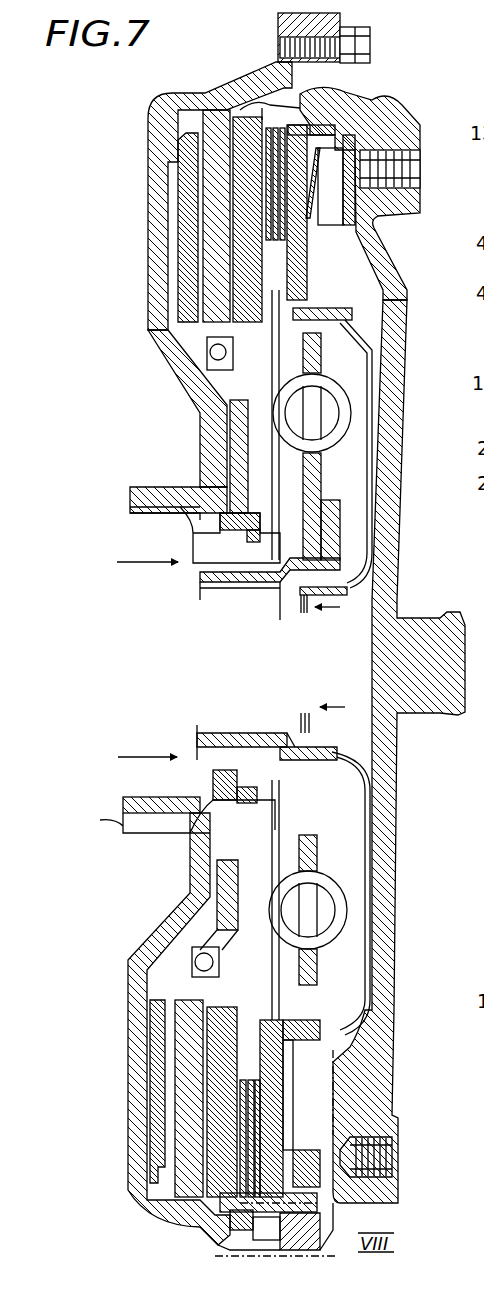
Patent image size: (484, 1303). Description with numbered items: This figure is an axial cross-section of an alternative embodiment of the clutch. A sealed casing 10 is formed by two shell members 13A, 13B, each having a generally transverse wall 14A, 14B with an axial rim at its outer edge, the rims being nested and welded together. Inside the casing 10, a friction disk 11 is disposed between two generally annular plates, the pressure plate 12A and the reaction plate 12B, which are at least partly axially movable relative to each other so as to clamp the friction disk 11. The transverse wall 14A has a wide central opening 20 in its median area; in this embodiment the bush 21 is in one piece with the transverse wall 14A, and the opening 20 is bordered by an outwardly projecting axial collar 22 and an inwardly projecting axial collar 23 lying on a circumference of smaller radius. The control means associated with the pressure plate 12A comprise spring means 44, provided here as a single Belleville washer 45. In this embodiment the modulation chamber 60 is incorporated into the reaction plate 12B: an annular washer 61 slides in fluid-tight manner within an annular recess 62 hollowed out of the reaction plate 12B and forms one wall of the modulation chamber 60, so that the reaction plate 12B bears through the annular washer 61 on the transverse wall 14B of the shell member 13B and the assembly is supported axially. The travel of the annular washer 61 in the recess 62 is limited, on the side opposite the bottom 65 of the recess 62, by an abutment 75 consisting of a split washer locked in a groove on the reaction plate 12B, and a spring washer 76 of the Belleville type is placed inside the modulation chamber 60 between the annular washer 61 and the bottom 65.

The casing 10 is at (376, 63).
The friction disk 11 is at (300, 112).
The pressure plate 12A is at (250, 105).
The reaction plate 12B is at (340, 120).
The shell member 13A is at (150, 160).
The shell member 13B is at (404, 270).
The transverse wall 14A is at (175, 360).
The transverse wall 14B is at (403, 355).
The central opening 20 is at (205, 555).
The bush 21 is at (160, 835).
The outwardly projecting axial collar 22 is at (108, 812).
The inwardly projecting axial collar 23 is at (228, 770).
The spring means 44 is at (176, 193).
The Belleville washer 45 is at (205, 245).
The modulation chamber 60 is at (262, 105).
The annular washer 61 is at (345, 160).
The annular recess 62 is at (348, 130).
The bottom of the recess 65 is at (232, 308).
The abutment 75 is at (350, 300).
The spring washer 76 is at (330, 200).